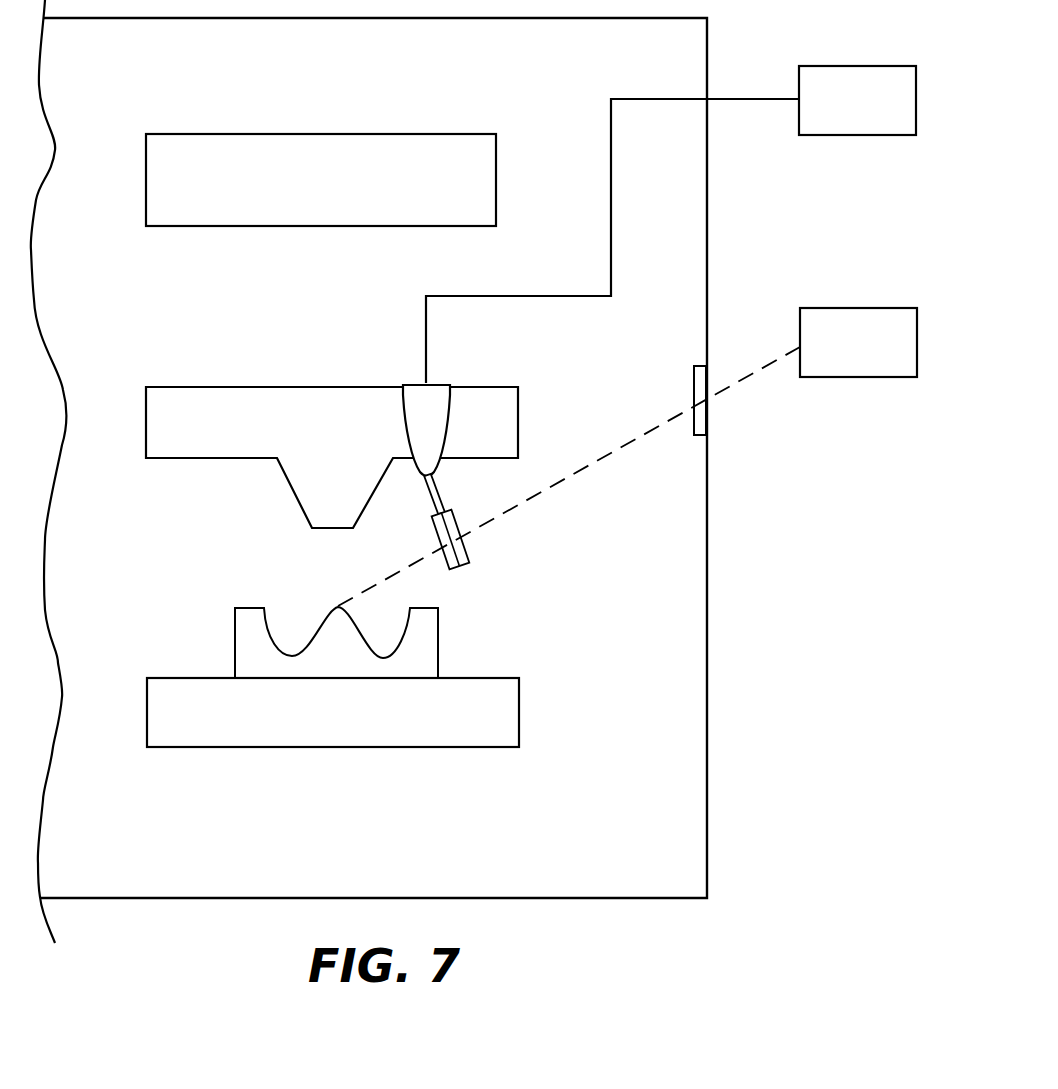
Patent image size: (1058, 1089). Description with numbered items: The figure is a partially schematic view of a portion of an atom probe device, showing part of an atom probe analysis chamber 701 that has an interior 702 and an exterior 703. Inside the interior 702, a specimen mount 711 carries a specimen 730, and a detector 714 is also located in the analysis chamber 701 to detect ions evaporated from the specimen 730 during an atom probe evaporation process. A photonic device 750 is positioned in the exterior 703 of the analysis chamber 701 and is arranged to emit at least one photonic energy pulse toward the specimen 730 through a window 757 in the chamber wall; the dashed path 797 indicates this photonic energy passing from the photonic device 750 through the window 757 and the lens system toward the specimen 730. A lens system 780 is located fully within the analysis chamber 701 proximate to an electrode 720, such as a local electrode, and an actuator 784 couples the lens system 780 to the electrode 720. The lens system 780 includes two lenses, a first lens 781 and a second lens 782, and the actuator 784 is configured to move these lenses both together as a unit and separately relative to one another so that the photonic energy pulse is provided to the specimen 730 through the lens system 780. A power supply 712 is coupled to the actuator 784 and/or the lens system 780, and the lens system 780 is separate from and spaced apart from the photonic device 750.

The atom probe analysis chamber 701 is at (682, 793).
The interior 702 is at (624, 658).
The exterior 703 is at (807, 658).
The specimen mount 711 is at (215, 747).
The power supply 712 is at (845, 66).
The detector 714 is at (425, 134).
The electrode 720 is at (283, 471).
The specimen 730 is at (235, 635).
The photonic device 750 is at (848, 308).
The window 757 is at (700, 428).
The lens system 780 is at (444, 538).
The first lens 781 is at (433, 523).
The second lens 782 is at (470, 545).
The actuator 784 is at (437, 388).
The light beam 797 is at (760, 375).